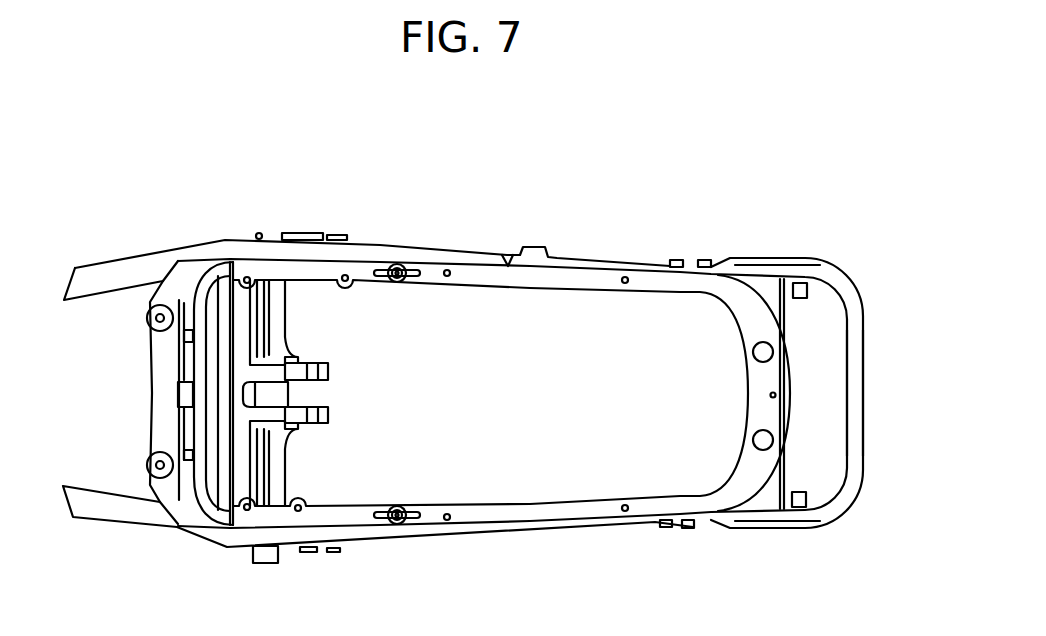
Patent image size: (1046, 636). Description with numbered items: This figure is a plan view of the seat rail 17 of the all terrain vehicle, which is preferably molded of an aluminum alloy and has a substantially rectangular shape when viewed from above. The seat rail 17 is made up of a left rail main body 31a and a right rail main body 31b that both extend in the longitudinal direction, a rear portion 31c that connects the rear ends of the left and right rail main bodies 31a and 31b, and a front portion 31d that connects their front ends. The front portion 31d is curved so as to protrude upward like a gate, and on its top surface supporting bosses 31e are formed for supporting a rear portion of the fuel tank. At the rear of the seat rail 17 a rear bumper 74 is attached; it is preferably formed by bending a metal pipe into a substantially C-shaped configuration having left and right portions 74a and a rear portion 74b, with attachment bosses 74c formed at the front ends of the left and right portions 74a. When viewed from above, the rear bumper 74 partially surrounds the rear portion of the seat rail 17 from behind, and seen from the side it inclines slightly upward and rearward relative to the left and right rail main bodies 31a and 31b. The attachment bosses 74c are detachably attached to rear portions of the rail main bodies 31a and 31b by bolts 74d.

The seat rail 17 is at (445, 228).
The left rail main body 31a is at (492, 533).
The right rail main body 31b is at (468, 262).
The rear portion 31c is at (753, 385).
The front portion 31d is at (165, 393).
The supporting bosses 31e is at (150, 322).
The rear bumper 74 is at (817, 253).
The left and right portions 74a is at (758, 258).
The rear portion 74b is at (865, 402).
The attachment bosses 74c is at (662, 268).
The bolts 74d is at (684, 259).